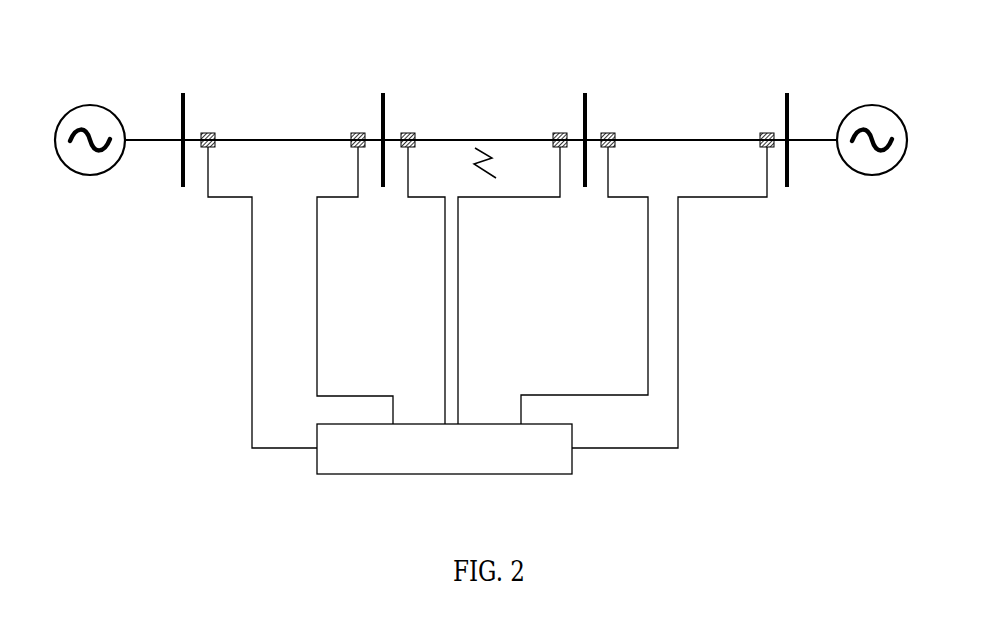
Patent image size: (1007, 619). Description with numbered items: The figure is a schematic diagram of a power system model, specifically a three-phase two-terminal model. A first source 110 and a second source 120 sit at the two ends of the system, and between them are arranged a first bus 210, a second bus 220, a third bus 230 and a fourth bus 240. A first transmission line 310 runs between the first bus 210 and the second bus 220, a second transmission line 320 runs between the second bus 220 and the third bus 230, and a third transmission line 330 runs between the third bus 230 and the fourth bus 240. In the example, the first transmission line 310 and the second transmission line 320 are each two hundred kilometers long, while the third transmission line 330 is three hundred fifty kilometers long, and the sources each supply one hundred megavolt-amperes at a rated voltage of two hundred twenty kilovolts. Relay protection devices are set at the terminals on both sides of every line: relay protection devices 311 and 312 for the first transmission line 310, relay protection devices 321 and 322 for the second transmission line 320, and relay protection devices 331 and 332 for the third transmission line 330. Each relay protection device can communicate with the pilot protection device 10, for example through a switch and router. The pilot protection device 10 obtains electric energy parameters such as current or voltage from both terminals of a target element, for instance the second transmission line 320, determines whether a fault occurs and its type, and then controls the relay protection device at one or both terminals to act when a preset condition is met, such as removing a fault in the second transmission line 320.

The pilot protection device 10 is at (572, 455).
The first source 110 is at (92, 183).
The second source 120 is at (888, 173).
The first bus 210 is at (187, 190).
The second bus 220 is at (389, 187).
The third bus 230 is at (588, 187).
The fourth bus 240 is at (790, 187).
The first transmission line 310 is at (270, 139).
The second transmission line 320 is at (482, 139).
The third transmission line 330 is at (683, 139).
The relay protection device 311 is at (207, 136).
The relay protection device 312 is at (351, 136).
The relay protection device 321 is at (405, 136).
The relay protection device 322 is at (549, 136).
The relay protection device 331 is at (607, 136).
The relay protection device 332 is at (760, 136).